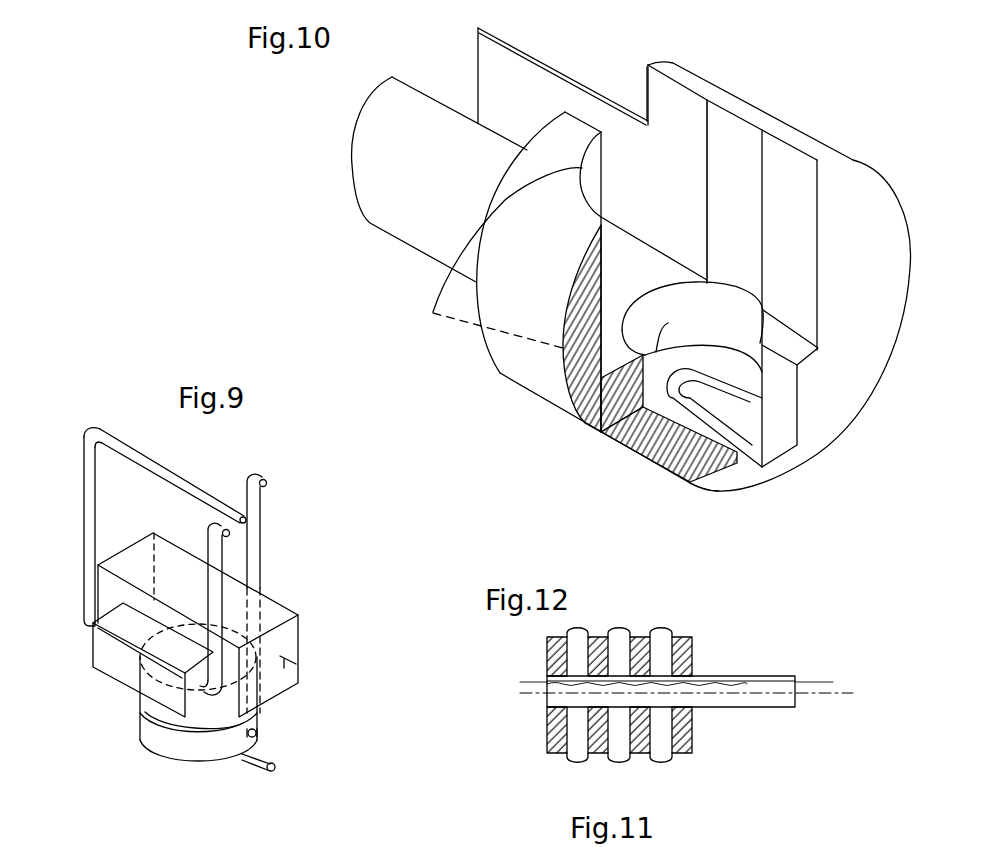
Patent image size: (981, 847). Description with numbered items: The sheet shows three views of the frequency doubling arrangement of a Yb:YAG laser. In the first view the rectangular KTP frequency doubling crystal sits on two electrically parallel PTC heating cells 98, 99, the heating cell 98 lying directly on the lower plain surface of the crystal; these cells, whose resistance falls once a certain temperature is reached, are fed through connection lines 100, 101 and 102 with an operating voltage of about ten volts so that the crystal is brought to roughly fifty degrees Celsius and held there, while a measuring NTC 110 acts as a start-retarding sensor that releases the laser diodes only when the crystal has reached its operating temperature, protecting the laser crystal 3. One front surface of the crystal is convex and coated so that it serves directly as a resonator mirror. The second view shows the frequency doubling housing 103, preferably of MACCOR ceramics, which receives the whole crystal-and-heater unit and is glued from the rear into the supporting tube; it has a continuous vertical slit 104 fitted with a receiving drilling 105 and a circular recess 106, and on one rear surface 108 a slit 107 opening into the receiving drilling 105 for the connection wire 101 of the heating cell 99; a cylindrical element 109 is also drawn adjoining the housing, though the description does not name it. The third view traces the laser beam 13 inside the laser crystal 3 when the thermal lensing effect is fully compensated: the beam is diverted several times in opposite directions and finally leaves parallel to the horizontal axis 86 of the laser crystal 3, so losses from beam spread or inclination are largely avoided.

In FIG. 12, the laser crystal 3 is at (773, 700).
In FIG. 12, the laser beam 13 is at (745, 673).
In FIG. 12, the horizontal axis 86 is at (842, 690).
In FIG. 9, the PTC heating cell 98 is at (170, 717).
In FIG. 9, the PTC heating cell 99 is at (203, 753).
In FIG. 9, the connection line 100 is at (255, 508).
In FIG. 9, the connection line 101 is at (258, 733).
In FIG. 9, the connection line 102 is at (277, 771).
In FIG. 9, the measuring NTC 110 is at (112, 667).
In FIG. 10, the frequency doubling housing 103 is at (712, 505).
In FIG. 10, the vertical slit 104 is at (535, 100).
In FIG. 10, the receiving drilling 105 is at (739, 132).
In FIG. 10, the circular recess 106 is at (480, 330).
In FIG. 10, the slit 107 is at (767, 441).
In FIG. 10, the rear surface 108 is at (860, 353).
In FIG. 10, the roller 109 is at (380, 178).